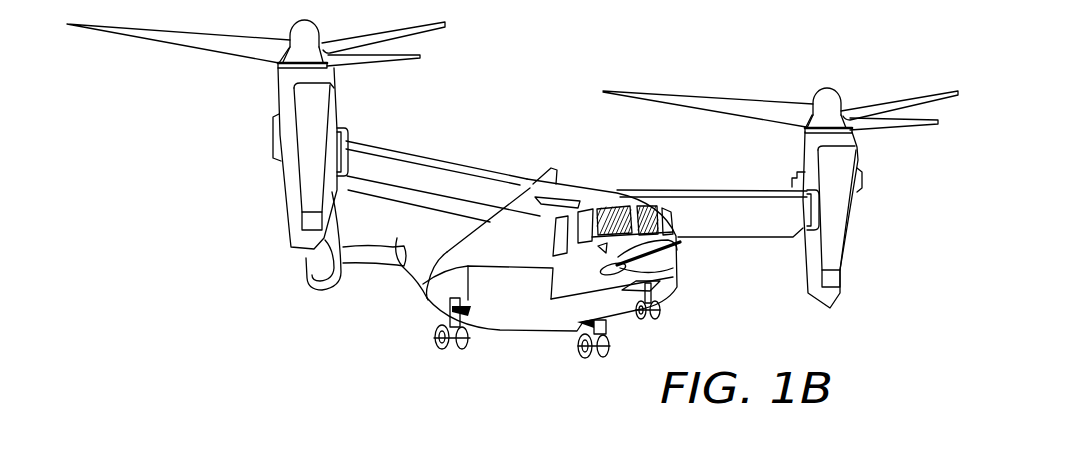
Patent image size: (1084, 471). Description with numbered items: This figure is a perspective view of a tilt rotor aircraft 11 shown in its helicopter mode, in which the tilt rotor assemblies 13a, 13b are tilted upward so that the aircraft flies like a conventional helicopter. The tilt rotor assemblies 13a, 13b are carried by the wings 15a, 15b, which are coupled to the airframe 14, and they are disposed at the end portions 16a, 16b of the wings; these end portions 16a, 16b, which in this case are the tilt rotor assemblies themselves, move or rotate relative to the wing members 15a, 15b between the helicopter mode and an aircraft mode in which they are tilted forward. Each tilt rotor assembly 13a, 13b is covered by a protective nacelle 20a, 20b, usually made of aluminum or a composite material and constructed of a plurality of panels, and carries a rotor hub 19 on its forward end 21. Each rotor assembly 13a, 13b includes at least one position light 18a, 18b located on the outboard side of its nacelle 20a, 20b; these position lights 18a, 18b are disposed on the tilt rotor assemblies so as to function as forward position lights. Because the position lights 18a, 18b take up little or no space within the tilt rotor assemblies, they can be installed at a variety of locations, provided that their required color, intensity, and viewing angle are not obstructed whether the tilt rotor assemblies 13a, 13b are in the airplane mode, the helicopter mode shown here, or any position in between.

The tilt rotor aircraft 11 is at (362, 334).
The tilt rotor assembly 13a is at (873, 238).
The tilt rotor assembly 13b is at (260, 183).
The airframe 14 is at (527, 332).
The wing 15a is at (697, 188).
The wing 15b is at (446, 158).
The end portion 16a is at (798, 247).
The end portion 16b is at (353, 122).
The position light 18a is at (862, 188).
The position light 18b is at (273, 122).
The rotor hub 19 is at (290, 36).
The protective nacelle 20a is at (840, 283).
The protective nacelle 20b is at (287, 238).
The forward end 21 is at (277, 75).